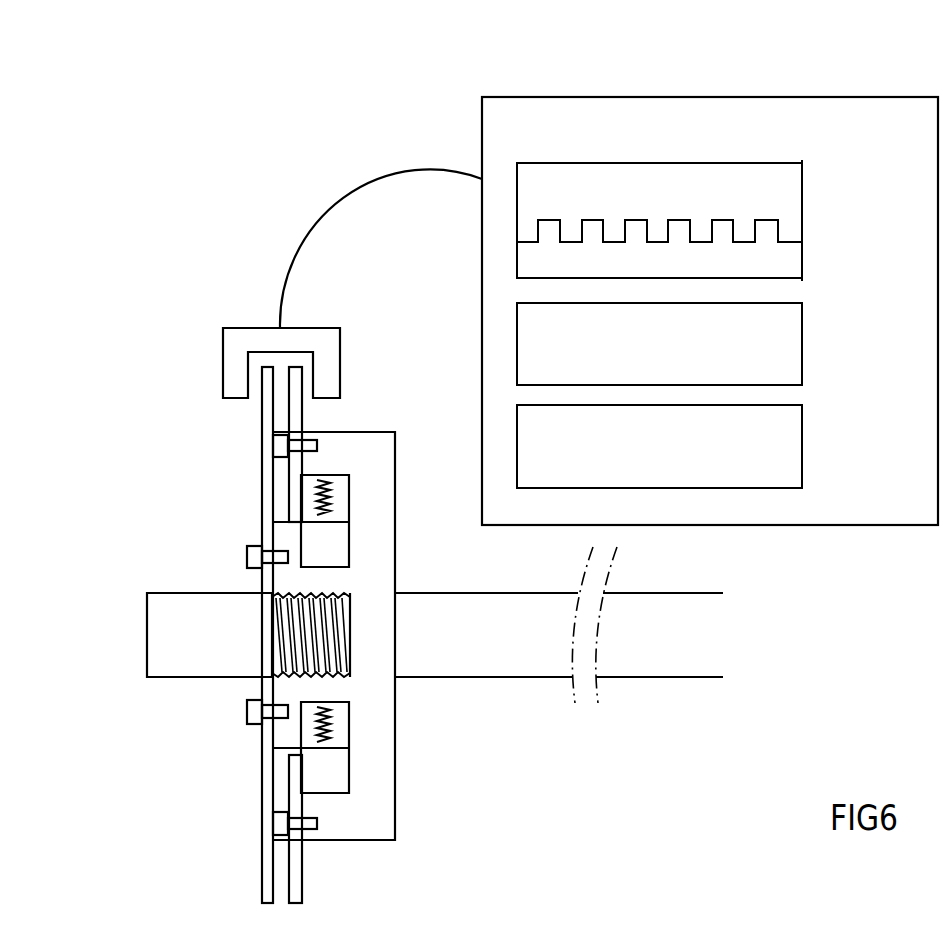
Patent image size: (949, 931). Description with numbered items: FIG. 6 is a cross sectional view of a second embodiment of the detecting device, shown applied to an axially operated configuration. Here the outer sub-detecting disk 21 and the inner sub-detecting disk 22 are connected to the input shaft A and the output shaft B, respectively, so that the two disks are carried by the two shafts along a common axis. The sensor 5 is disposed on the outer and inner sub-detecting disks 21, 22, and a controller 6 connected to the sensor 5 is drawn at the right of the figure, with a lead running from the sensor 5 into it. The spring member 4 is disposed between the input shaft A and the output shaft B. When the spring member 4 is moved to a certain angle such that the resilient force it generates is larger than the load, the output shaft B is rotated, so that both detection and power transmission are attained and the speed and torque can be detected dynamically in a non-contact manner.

The controller / control unit 6 is at (555, 123).
The sensor 5 is at (228, 365).
The outer sub-detecting disk 21 is at (268, 458).
The inner sub-detecting disk 22 is at (302, 425).
The spring member 4 is at (333, 502).
The input shaft A is at (200, 660).
The output shaft B is at (457, 608).